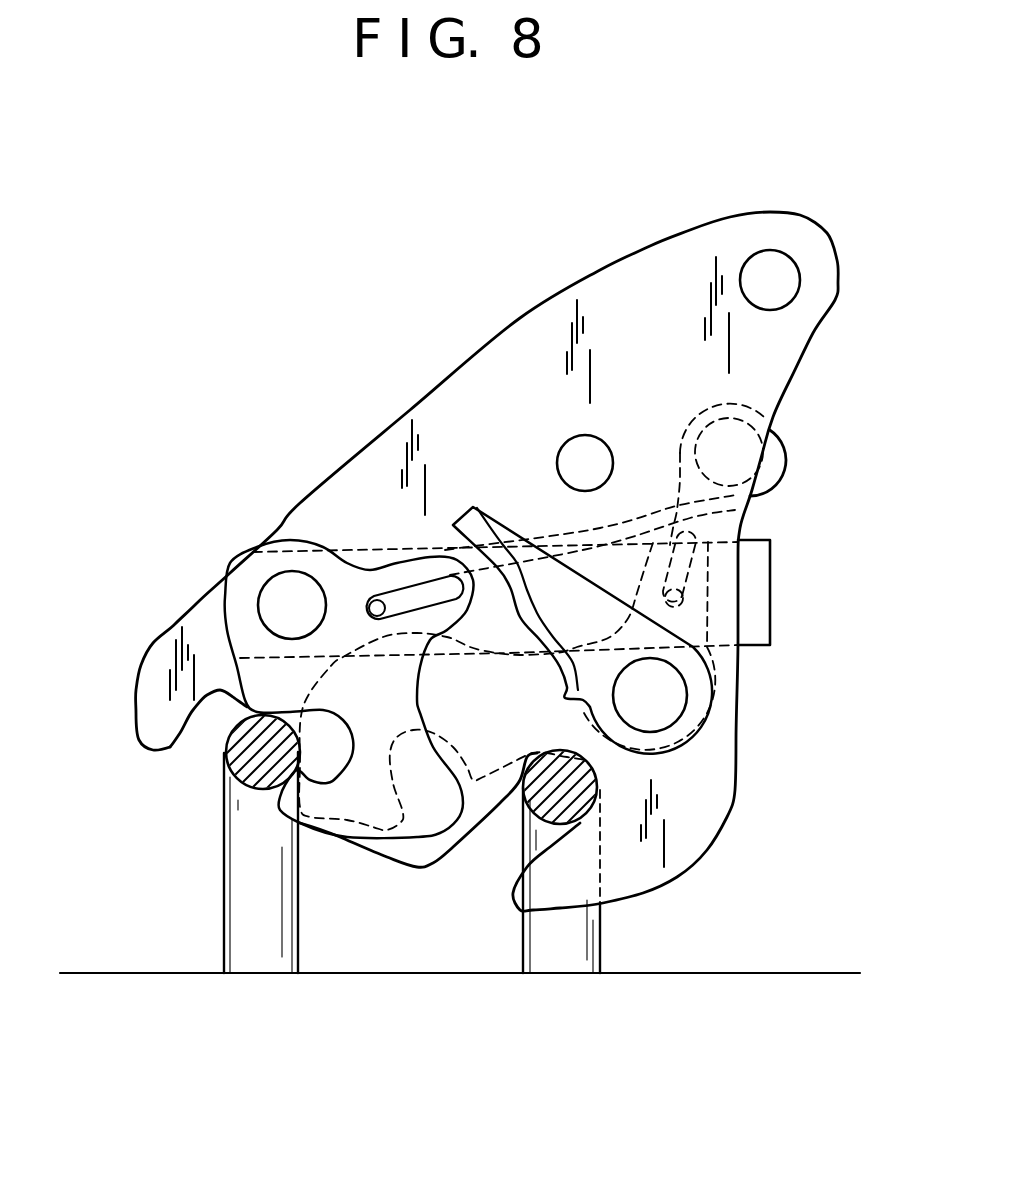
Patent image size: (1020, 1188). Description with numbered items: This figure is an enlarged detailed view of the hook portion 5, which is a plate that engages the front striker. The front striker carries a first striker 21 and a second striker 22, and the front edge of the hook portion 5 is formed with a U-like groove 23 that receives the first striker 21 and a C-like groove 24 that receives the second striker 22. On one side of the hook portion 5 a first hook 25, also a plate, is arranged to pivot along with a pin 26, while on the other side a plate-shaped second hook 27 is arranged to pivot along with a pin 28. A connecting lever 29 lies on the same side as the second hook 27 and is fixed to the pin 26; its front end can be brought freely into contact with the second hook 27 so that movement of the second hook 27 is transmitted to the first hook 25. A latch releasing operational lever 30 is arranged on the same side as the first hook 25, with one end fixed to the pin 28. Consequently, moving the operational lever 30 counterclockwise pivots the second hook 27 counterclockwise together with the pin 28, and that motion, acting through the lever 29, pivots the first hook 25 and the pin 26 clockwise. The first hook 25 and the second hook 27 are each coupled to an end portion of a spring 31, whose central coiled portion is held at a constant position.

The hook portion 5 is at (507, 330).
The first striker 21 is at (603, 937).
The second striker 22 is at (237, 885).
The U-like groove 23 is at (547, 853).
The C-like groove 24 is at (208, 755).
The first hook 25 is at (680, 762).
The pin 26 is at (662, 697).
The second hook 27 is at (377, 570).
The pin 28 is at (280, 600).
The connecting lever 29 is at (488, 497).
The latch releasing operational lever 30 is at (770, 597).
The spring 31 is at (778, 460).